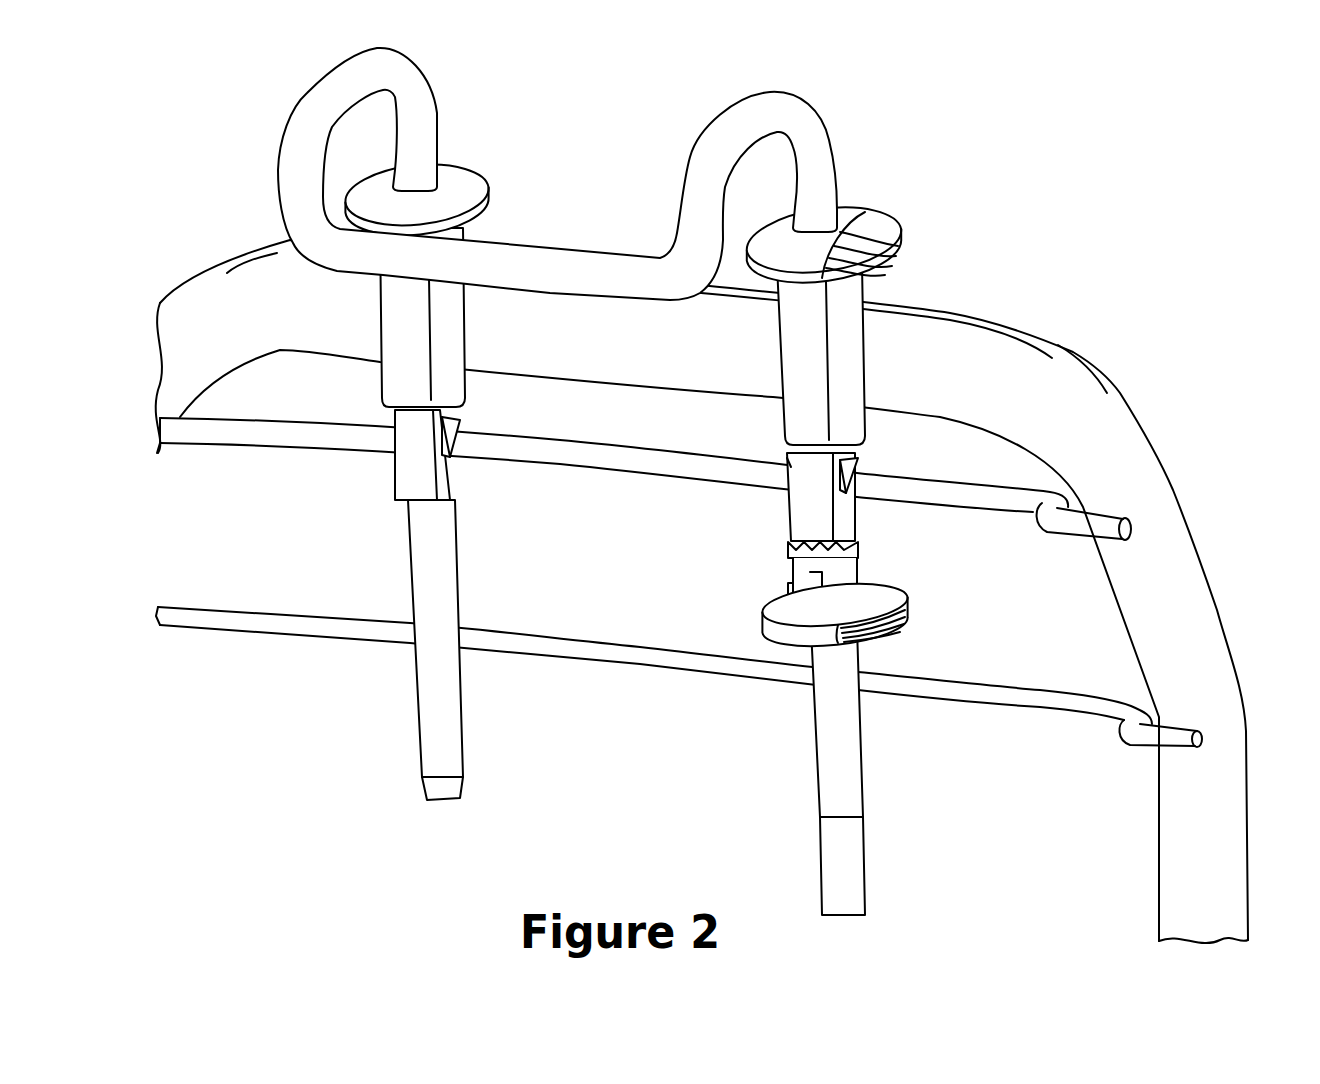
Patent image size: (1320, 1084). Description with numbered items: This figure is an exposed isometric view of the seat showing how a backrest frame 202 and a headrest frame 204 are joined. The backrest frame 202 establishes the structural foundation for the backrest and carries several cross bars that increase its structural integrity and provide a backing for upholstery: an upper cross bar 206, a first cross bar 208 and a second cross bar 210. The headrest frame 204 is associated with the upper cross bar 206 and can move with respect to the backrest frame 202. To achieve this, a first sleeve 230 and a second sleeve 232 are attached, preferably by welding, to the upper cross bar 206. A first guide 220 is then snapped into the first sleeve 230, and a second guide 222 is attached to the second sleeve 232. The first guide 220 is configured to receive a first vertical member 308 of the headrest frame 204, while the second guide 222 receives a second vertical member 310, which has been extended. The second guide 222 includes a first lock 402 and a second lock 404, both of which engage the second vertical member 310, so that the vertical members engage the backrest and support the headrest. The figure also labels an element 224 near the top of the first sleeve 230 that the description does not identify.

The backrest frame 202 is at (1132, 335).
The headrest frame 204 is at (228, 103).
The upper cross bar 206 is at (965, 335).
The first cross bar 208 is at (267, 437).
The second cross bar 210 is at (212, 620).
The first guide 220 is at (405, 482).
The second guide 222 is at (808, 500).
The left cap 224 is at (457, 179).
The first sleeve 230 is at (447, 365).
The second sleeve 232 is at (802, 380).
The first vertical member 308 is at (453, 707).
The second vertical member 310 is at (833, 713).
The first lock 402 is at (853, 212).
The second lock 404 is at (778, 600).